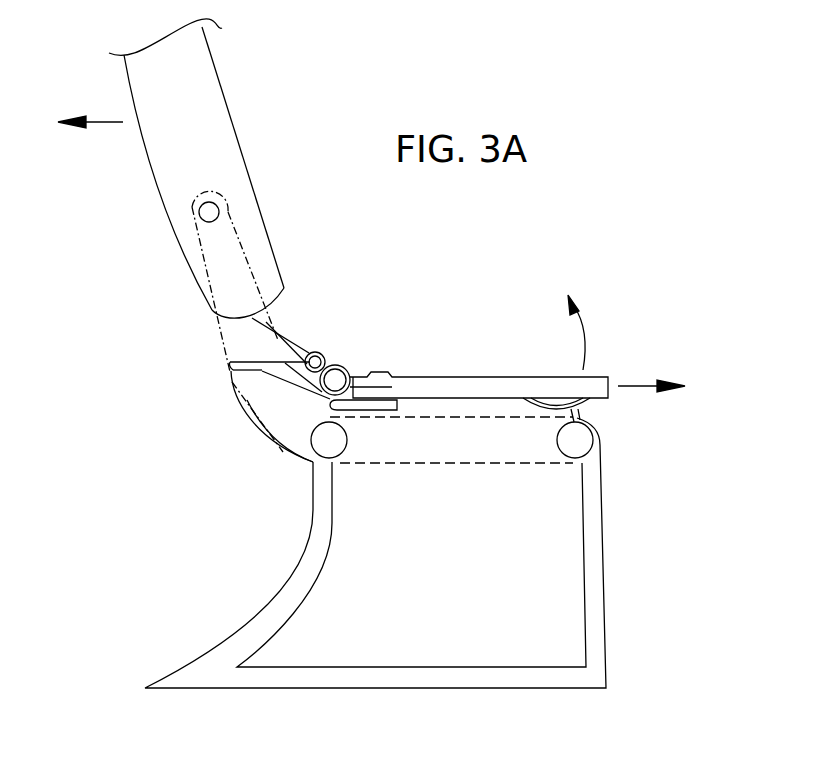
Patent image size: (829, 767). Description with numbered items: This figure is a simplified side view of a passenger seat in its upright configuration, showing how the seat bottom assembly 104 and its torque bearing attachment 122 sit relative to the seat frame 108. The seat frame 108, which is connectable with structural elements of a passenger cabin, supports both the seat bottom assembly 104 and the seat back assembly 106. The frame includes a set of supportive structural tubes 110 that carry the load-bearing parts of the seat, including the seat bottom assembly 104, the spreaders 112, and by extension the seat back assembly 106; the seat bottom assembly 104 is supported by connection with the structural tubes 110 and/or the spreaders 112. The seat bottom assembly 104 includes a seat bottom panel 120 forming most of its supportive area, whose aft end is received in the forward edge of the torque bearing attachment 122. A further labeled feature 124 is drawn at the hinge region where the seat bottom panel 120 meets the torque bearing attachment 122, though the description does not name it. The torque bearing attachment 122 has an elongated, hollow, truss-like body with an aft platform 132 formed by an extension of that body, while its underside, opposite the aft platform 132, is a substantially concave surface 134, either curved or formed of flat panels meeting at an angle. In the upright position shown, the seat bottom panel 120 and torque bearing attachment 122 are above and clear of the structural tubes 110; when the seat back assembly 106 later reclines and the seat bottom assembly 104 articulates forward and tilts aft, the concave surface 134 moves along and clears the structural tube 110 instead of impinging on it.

The seat bottom assembly 104 is at (467, 338).
The seat back assembly 106 is at (236, 141).
The seat frame 108 is at (620, 567).
The structural tubes 110 is at (342, 453).
The spreaders 112 is at (453, 463).
The seat bottom panel 120 is at (470, 378).
The torque bearing attachment 122 is at (335, 348).
The seat pan hinge 124 is at (353, 372).
The aft platform 132 is at (230, 362).
The concave surface 134 is at (237, 390).